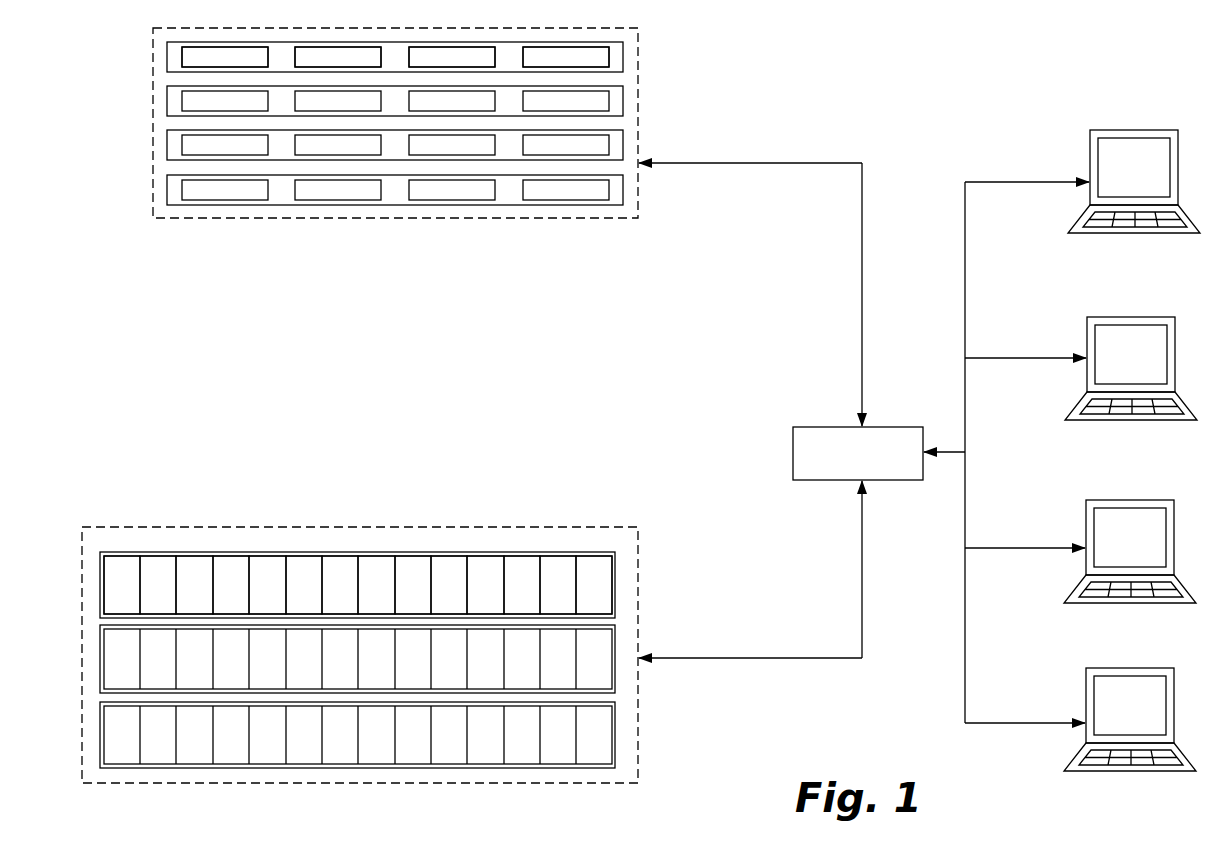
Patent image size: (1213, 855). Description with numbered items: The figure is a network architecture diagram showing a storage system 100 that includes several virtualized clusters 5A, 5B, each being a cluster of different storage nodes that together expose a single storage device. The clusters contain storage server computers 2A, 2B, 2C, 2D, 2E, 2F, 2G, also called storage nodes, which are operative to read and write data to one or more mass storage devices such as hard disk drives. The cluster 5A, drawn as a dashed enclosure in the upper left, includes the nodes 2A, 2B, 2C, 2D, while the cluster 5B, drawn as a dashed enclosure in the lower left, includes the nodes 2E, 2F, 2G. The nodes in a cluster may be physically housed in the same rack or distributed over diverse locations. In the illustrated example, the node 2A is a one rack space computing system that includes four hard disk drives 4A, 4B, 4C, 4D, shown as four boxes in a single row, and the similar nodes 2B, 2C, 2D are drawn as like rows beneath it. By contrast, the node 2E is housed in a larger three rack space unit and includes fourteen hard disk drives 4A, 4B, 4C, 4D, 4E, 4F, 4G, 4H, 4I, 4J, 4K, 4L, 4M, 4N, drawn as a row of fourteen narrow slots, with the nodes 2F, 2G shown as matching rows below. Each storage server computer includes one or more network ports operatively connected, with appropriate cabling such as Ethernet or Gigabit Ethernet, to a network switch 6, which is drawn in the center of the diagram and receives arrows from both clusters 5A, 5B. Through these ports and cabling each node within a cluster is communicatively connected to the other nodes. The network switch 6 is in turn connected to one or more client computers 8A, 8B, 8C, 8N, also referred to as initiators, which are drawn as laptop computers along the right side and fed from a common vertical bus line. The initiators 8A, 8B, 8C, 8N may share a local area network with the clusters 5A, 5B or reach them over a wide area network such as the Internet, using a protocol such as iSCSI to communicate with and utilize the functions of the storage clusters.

The storage system 100 is at (931, 106).
The virtualized cluster 5A is at (631, 50).
The virtualized cluster 5B is at (630, 553).
The storage server computer 2A is at (617, 68).
The storage server computer 2B is at (617, 112).
The storage server computer 2C is at (617, 156).
The storage server computer 2D is at (617, 200).
The storage server computer 2E is at (614, 598).
The storage server computer 2F is at (614, 666).
The storage server computer 2G is at (614, 740).
The hard disk drive 4A is at (186, 330).
The hard disk drive 4B is at (260, 330).
The hard disk drive 4C is at (335, 330).
The hard disk drive 4D is at (411, 330).
The hard disk drive 4E is at (267, 585).
The hard disk drive 4F is at (304, 585).
The hard disk drive 4G is at (340, 585).
The hard disk drive 4H is at (376, 585).
The hard disk drive 4I is at (413, 585).
The hard disk drive 4J is at (449, 585).
The hard disk drive 4K is at (485, 585).
The hard disk drive 4L is at (522, 585).
The hard disk drive 4M is at (558, 585).
The hard disk drive 4N is at (594, 585).
The network switch 6 is at (890, 481).
The client computer 8A is at (1173, 234).
The client computer 8B is at (1170, 421).
The client computer 8C is at (1169, 604).
The client computer 8N is at (1169, 772).